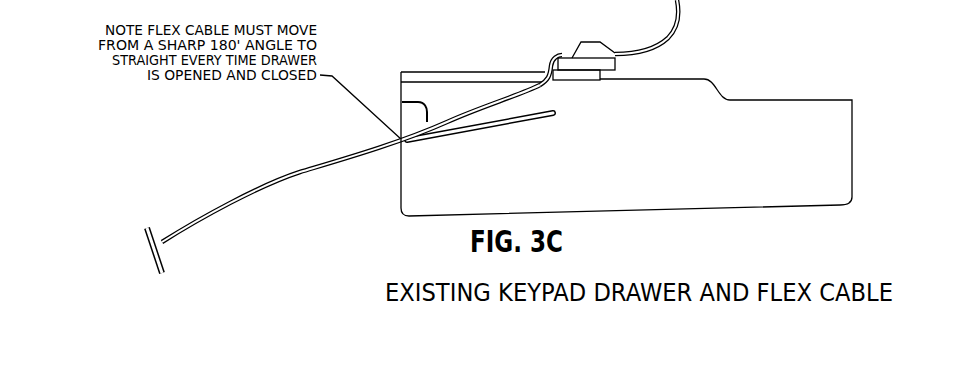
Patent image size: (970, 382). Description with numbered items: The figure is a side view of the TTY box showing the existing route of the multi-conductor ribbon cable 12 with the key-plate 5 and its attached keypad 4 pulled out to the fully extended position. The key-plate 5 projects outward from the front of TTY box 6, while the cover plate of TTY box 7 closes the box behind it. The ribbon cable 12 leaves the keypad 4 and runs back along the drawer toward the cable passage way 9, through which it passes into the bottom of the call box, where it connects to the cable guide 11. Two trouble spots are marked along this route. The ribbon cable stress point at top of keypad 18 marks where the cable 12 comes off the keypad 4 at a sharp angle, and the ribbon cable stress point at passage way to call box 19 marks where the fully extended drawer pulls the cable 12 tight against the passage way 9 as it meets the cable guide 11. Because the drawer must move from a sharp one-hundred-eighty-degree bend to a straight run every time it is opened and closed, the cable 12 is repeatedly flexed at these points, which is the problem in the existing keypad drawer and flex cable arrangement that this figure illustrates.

The keypad 4 is at (293, 173).
The key-plate 5 is at (162, 250).
The front of TTY box 6 is at (400, 187).
The cover plate of TTY box 7 is at (815, 98).
The cable passage way 9 is at (549, 74).
The cable guide 11 is at (585, 42).
The ribbon cable 12 is at (412, 128).
The ribbon cable stress point at top of keypad 18 is at (393, 132).
The ribbon cable stress point at passage way to call box 19 is at (553, 87).